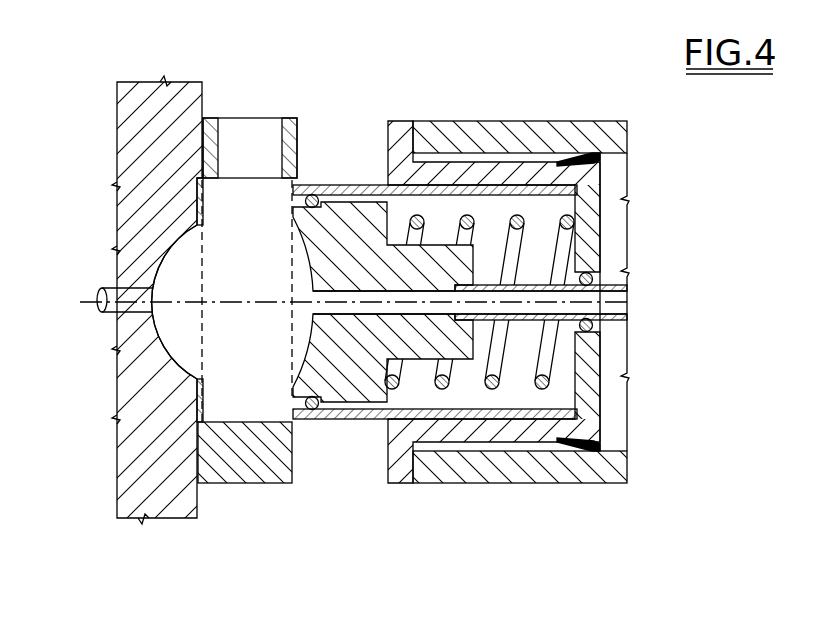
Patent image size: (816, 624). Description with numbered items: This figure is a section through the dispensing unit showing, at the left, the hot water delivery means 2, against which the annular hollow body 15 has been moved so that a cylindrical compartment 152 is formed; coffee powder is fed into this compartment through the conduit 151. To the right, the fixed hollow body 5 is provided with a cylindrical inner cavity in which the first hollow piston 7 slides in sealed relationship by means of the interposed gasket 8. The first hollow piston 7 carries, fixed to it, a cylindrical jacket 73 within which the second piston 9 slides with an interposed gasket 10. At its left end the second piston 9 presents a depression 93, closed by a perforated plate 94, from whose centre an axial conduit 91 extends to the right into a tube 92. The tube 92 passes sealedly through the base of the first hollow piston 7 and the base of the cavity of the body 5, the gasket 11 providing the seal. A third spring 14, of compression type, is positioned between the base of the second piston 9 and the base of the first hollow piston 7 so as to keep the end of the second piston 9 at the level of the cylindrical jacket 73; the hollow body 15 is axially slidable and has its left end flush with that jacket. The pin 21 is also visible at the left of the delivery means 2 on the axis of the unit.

The hot water delivery means 2 is at (138, 97).
The conduit 151 is at (250, 127).
The cylindrical compartment 152 is at (226, 244).
The pin 21 is at (102, 303).
The perforated plate 94 is at (292, 285).
The depression 93 is at (300, 255).
The axial conduit 91 is at (343, 308).
The second piston 9 is at (348, 389).
The gasket 10 is at (312, 410).
The hollow body 15 is at (232, 482).
The cylindrical jacket 73 is at (340, 185).
The first hollow piston 7 is at (468, 170).
The fixed hollow body 5 is at (522, 130).
The gasket 8 is at (578, 157).
The tube 92 is at (618, 298).
The gasket 11 is at (597, 328).
The third spring 14 is at (547, 372).